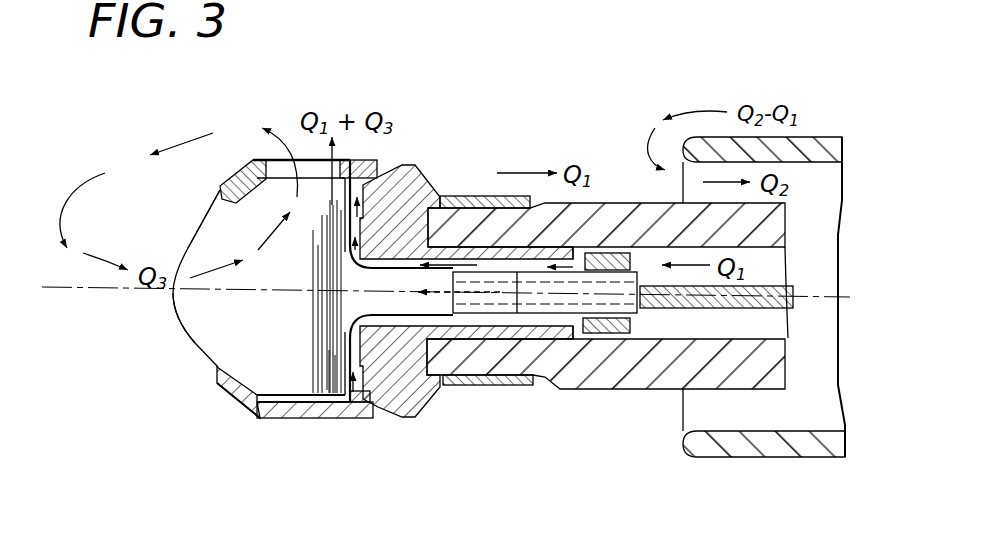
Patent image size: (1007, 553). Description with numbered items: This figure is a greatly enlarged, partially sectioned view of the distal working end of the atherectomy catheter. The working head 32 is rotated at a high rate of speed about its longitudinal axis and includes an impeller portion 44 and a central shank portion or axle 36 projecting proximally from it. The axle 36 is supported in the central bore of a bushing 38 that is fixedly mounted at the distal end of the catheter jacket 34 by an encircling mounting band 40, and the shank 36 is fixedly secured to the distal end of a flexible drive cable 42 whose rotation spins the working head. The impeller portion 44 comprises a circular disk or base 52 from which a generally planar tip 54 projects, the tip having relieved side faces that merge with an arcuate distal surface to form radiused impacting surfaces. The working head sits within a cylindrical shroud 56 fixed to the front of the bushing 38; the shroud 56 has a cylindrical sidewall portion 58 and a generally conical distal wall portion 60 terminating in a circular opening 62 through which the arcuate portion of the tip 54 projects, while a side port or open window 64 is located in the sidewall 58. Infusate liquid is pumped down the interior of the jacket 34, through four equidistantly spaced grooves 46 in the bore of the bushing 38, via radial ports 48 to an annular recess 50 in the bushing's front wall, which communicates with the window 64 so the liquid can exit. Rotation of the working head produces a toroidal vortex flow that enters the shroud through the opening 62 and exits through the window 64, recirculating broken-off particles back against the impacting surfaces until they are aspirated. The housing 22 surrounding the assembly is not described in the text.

The housing 22 is at (595, 393).
The working head 32 is at (232, 160).
The catheter jacket 34 is at (633, 208).
The central shank portion or axle 36 is at (346, 266).
The bushing 38 is at (408, 180).
The mounting band 40 is at (480, 200).
The flexible drive cable 42 is at (680, 308).
The impeller portion 44 is at (240, 325).
The grooves 46 is at (475, 268).
The radial ports 48 is at (363, 185).
The annular recess 50 is at (380, 160).
The circular disk or base 52 is at (338, 370).
The tip 54 is at (180, 325).
The cylindrical shroud 56 is at (263, 420).
The cylindrical sidewall portion 58 is at (319, 415).
The conical distal wall portion 60 is at (233, 407).
The circular opening 62 is at (218, 200).
The side port or open window 64 is at (280, 162).